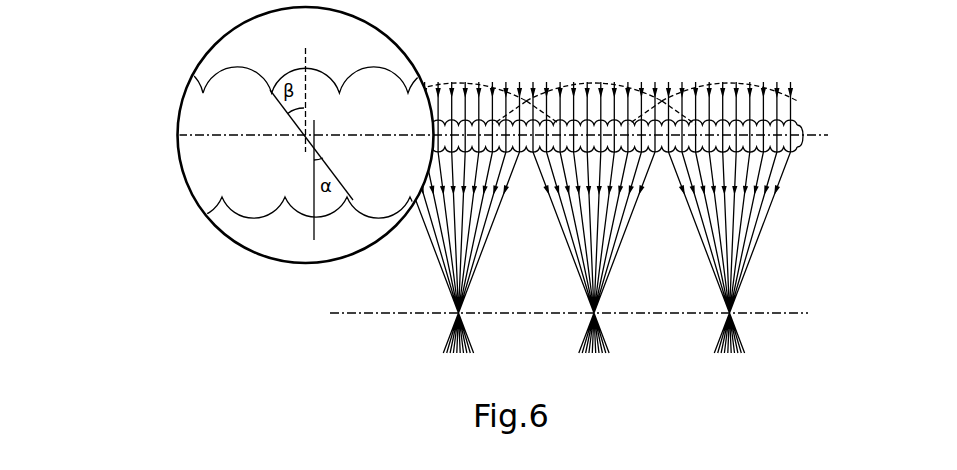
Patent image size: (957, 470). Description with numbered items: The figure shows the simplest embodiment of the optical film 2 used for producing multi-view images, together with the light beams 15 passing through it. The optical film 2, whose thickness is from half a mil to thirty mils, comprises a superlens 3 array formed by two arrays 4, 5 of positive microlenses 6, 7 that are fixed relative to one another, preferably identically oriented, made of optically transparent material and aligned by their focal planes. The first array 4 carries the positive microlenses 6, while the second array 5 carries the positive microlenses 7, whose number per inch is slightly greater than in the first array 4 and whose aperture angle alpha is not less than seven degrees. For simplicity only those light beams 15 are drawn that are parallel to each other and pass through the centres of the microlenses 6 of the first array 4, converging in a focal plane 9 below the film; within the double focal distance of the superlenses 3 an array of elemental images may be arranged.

The optical film 2 is at (609, 98).
The superlens 3 is at (612, 83).
The first array 4 is at (804, 121).
The second array 5 is at (804, 138).
The positive microlenses 6 is at (372, 68).
The positive microlenses 7 is at (390, 218).
The focal plane 9 is at (518, 315).
The light beams 15 is at (771, 216).